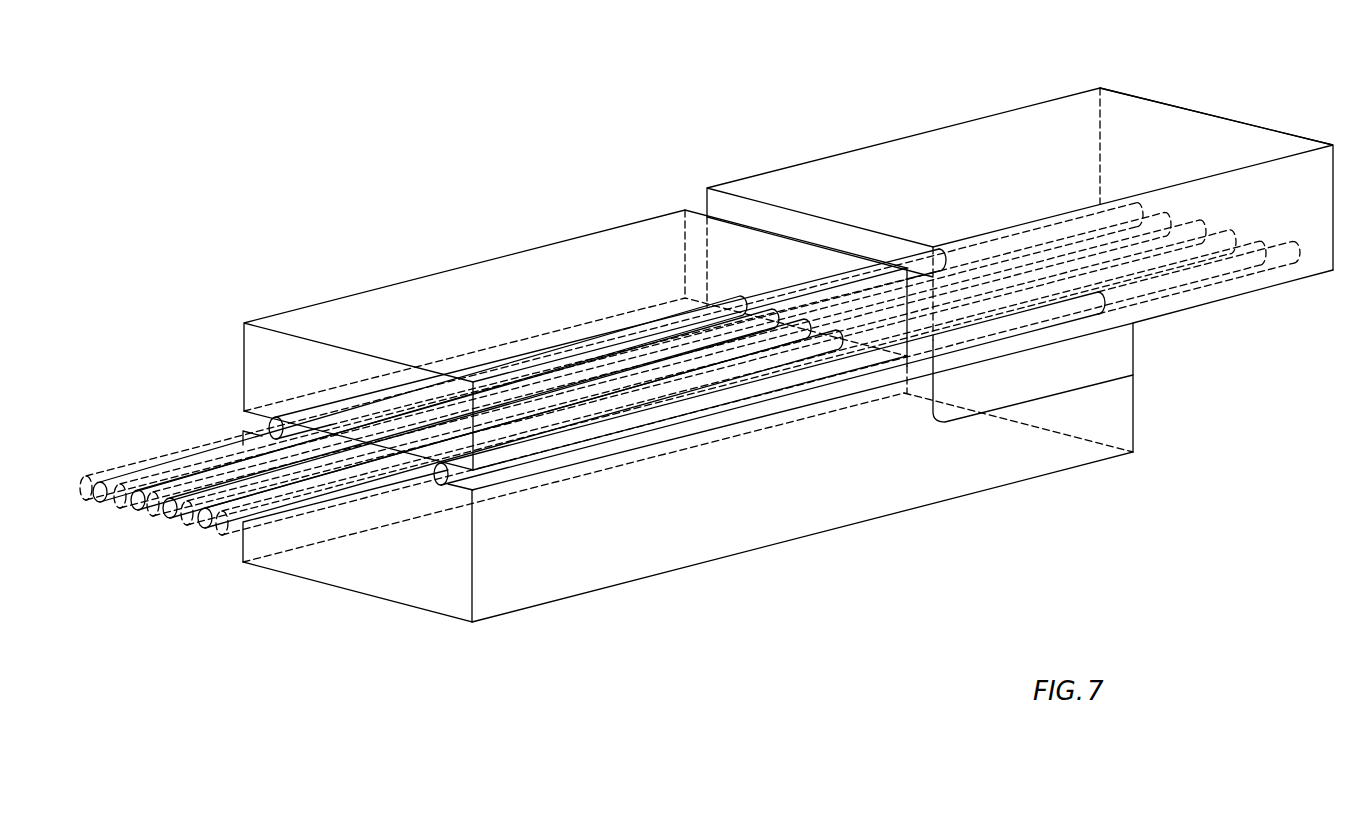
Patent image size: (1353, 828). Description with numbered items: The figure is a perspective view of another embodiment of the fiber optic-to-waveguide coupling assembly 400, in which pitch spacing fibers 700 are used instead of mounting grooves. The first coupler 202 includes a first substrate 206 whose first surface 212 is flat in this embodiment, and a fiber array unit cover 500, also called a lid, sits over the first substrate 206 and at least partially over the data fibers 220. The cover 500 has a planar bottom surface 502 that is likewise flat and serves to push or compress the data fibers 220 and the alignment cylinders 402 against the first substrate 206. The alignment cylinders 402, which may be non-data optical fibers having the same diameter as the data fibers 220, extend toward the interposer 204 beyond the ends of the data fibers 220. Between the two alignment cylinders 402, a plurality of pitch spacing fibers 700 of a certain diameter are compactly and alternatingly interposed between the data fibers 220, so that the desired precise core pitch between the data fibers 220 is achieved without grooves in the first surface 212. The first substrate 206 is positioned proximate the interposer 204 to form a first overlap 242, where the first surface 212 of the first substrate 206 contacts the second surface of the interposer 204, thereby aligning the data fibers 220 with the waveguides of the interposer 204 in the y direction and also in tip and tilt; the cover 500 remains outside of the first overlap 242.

The first coupler 202 is at (519, 616).
The interposer 204 is at (1224, 104).
The first substrate 206 is at (890, 514).
The first surface 212 is at (580, 455).
The data fibers 220 is at (172, 482).
The first overlap 242 is at (1035, 400).
The fiber optic-to-waveguide coupling assembly 400 is at (1010, 100).
The alignment cylinders 402 is at (268, 426).
The fiber array unit cover 500 is at (457, 265).
The planar bottom surface 502 is at (510, 463).
The pitch spacing fibers 700 is at (148, 570).